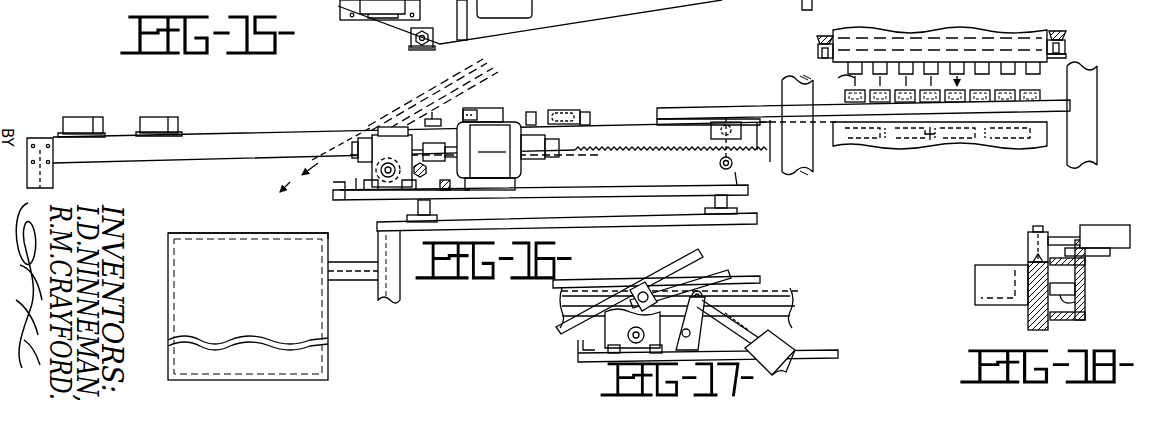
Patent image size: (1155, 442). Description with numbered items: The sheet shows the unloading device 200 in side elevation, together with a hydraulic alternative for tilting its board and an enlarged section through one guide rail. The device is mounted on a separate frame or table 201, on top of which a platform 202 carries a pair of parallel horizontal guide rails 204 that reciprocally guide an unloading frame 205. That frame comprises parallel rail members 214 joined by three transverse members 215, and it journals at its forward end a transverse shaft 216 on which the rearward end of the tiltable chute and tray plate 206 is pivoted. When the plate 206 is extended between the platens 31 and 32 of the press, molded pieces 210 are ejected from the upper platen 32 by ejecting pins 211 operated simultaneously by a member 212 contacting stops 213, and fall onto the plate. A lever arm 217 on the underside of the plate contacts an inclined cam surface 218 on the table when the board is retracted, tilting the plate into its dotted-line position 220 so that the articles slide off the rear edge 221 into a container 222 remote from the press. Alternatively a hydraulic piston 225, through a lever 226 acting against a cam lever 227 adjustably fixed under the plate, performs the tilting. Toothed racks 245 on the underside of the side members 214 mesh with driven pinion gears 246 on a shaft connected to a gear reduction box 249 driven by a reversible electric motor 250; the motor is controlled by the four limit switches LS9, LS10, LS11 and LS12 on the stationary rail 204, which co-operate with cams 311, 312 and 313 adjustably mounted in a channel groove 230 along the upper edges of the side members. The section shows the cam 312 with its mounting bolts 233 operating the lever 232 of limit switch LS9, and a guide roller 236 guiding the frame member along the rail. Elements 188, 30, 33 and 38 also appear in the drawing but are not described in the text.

In FIG. 15, the frame or table 201 is at (655, 18).
In FIG. 16, the frame or table 201 is at (760, 222).
In FIG. 16, the platform 202 is at (540, 197).
In FIG. 16, the guide rails 204 is at (295, 136).
In FIG. 17, the guide rails 204 is at (798, 288).
In FIG. 18, the guide rails 204 is at (1085, 270).
In FIG. 16, the unloading frame 205 is at (770, 152).
In FIG. 17, the unloading frame 205 is at (800, 290).
In FIG. 18, the unloading frame 205 is at (974, 286).
In FIG. 16, the tiltable chute and tray plate 206 is at (456, 98).
In FIG. 17, the tiltable chute and tray plate 206 is at (756, 280).
In FIG. 16, the molded pieces or objects 210 is at (428, 92).
In FIG. 16, the ejecting pins 211 is at (957, 80).
In FIG. 16, the member 212 is at (1062, 52).
In FIG. 16, the stops 213 is at (818, 48).
In FIG. 18, the rail members 214 is at (1028, 297).
In FIG. 18, the transverse members 215 is at (988, 276).
In FIG. 16, the transverse shaft 216 is at (728, 121).
In FIG. 17, the transverse shaft 216 is at (641, 285).
In FIG. 16, the lever arm 217 is at (719, 163).
In FIG. 16, the inclined cam surface 218 is at (462, 185).
In FIG. 16, the dotted line position 220 is at (488, 68).
In FIG. 17, the dotted line position 220 is at (688, 258).
In FIG. 16, the rear edge 221 is at (322, 165).
In FIG. 16, the container 222 is at (250, 238).
In FIG. 17, the hydraulic piston 225 is at (775, 338).
In FIG. 17, the lever 226 is at (722, 320).
In FIG. 17, the cam lever 227 is at (706, 278).
In FIG. 18, the channel groove 230 is at (1033, 258).
In FIG. 18, the lever of limit switch 232 is at (1068, 238).
In FIG. 18, the mounting bolts 233 is at (1038, 226).
In FIG. 18, the guide roller 236 is at (1082, 302).
In FIG. 16, the toothed racks 245 is at (606, 152).
In FIG. 18, the toothed racks 245 is at (1028, 322).
In FIG. 16, the pinion gears 246 is at (378, 171).
In FIG. 16, the gear reduction box 249 is at (405, 158).
In FIG. 17, the gear reduction box 249 is at (618, 336).
In FIG. 16, the reversible electric motor 250 is at (508, 156).
In FIG. 16, the shaft 188 is at (386, 190).
In FIG. 16, the unloading device 200 is at (690, 107).
In FIG. 16, the limit switch operating cam 311 is at (590, 117).
In FIG. 16, the limit switch operating cam 312 is at (531, 112).
In FIG. 18, the limit switch operating cam 312 is at (1028, 236).
In FIG. 16, the limit switch operating cam 313 is at (447, 111).
In FIG. 16, the lower channel 30 is at (940, 140).
In FIG. 16, the platen 31 is at (885, 148).
In FIG. 16, the upper platen 32 is at (928, 34).
In FIG. 16, the contact fingers 33 is at (930, 75).
In FIG. 16, the support post 38 is at (1097, 88).
In FIG. 16, the limit switch LS9 is at (490, 110).
In FIG. 18, the limit switch LS9 is at (1097, 240).
In FIG. 16, the limit switch LS10 is at (103, 121).
In FIG. 16, the limit switch LS11 is at (587, 110).
In FIG. 16, the limit switch LS12 is at (178, 123).